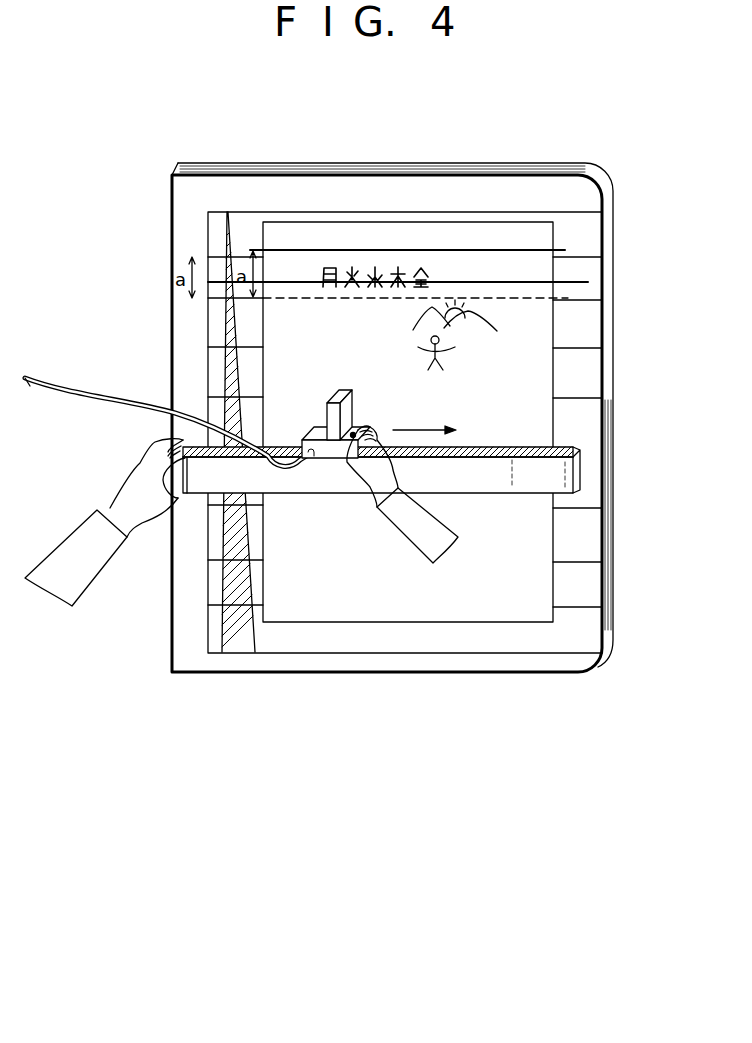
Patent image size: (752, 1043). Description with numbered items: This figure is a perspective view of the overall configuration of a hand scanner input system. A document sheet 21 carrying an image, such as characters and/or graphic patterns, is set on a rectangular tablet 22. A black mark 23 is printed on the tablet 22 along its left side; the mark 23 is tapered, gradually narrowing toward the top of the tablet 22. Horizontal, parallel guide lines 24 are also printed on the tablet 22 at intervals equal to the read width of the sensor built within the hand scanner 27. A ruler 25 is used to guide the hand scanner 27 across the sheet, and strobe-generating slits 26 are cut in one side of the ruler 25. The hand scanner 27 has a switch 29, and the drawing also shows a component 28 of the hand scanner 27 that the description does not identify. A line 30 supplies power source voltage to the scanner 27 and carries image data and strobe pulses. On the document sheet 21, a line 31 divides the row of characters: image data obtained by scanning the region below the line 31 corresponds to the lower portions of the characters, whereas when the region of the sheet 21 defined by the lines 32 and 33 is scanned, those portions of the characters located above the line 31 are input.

The document sheet 21 is at (539, 236).
The rectangular tablet 22 is at (455, 174).
The black mark 23 is at (240, 654).
The guide lines 24 is at (243, 211).
The ruler 25 is at (571, 478).
The strobe-generating slits 26 is at (571, 447).
The hand scanner 27 is at (331, 458).
The cursor upright 28 is at (353, 410).
The switch 29 is at (356, 432).
The line 30 is at (81, 393).
The line 31 is at (588, 283).
The line 32 is at (563, 251).
The line 33 is at (513, 298).